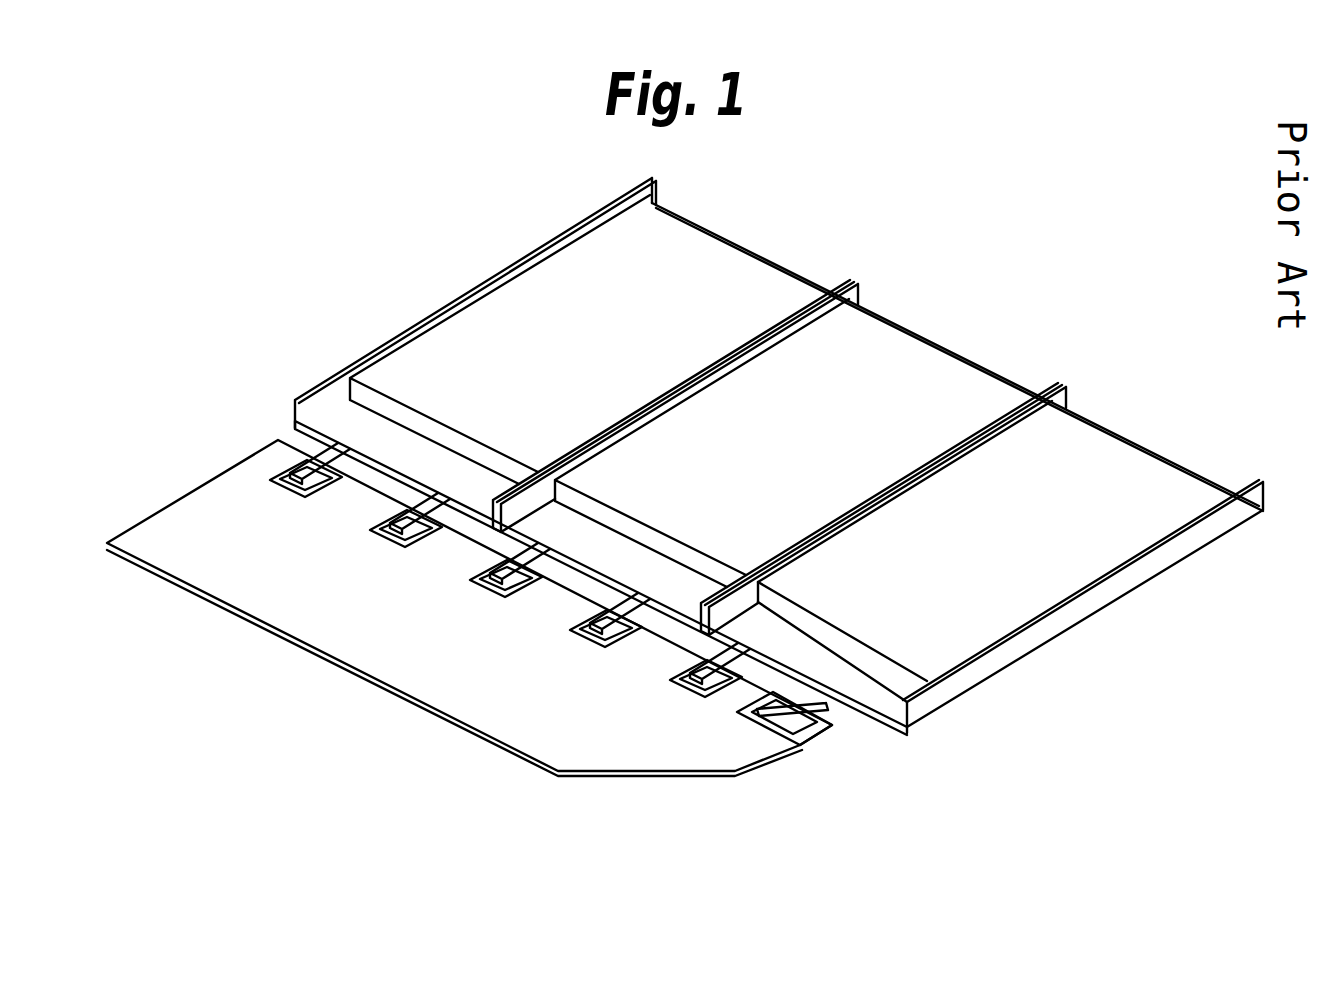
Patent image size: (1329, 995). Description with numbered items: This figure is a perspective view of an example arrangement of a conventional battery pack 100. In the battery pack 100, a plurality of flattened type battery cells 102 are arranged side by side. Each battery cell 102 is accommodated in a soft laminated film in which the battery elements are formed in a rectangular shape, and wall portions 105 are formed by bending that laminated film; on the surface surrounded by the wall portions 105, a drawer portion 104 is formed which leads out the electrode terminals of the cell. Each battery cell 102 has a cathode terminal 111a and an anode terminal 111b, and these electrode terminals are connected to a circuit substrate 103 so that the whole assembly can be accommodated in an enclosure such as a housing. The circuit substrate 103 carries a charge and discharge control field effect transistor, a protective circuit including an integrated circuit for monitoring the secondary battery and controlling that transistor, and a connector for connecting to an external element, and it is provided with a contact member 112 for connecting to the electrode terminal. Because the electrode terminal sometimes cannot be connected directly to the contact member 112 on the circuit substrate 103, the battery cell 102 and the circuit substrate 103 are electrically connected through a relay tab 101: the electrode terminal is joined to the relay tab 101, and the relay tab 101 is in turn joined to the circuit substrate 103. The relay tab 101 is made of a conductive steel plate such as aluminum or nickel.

The battery pack 100 is at (1197, 227).
The relay tab 101 is at (803, 722).
The battery cell 102 is at (700, 267).
The circuit substrate 103 is at (430, 668).
The drawer portion 104 is at (890, 685).
The wall portion 105 is at (762, 590).
The cathode terminal 111a is at (287, 487).
The anode terminal 111b is at (378, 528).
The contact member 112 is at (275, 470).